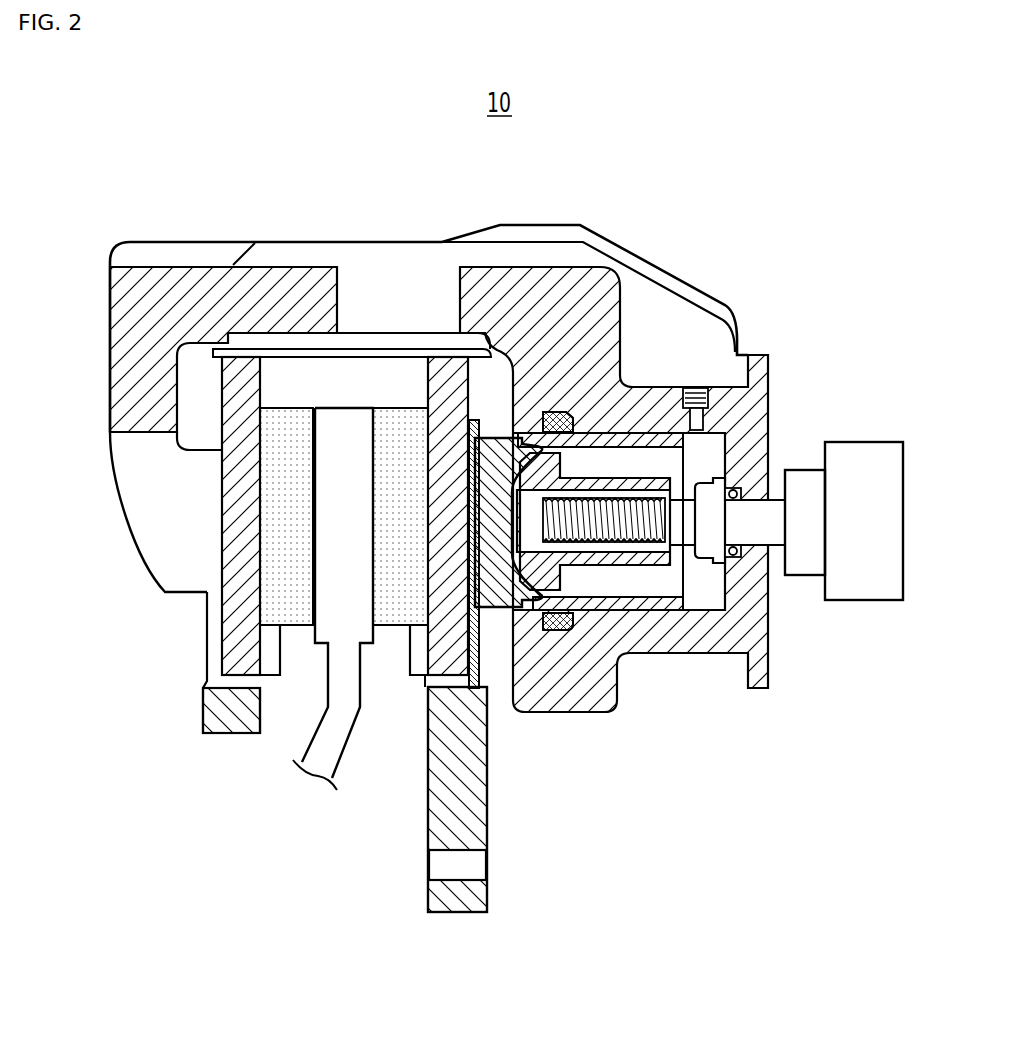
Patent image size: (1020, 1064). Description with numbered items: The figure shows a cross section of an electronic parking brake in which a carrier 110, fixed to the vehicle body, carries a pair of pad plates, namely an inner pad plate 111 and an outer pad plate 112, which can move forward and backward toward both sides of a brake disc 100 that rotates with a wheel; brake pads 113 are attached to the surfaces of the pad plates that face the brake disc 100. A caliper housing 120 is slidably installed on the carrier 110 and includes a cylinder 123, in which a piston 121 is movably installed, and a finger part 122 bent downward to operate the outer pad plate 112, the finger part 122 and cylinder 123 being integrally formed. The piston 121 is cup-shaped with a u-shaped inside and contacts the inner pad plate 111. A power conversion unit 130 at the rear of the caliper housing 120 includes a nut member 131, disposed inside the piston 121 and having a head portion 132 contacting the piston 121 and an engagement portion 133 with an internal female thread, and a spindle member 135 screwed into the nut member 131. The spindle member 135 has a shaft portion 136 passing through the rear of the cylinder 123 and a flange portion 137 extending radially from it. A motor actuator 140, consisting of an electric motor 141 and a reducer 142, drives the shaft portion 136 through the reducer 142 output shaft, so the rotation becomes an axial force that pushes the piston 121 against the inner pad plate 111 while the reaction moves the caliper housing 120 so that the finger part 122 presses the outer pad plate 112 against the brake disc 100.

The brake disc 100 is at (333, 770).
The carrier 110 is at (421, 780).
The inner pad plate 111 is at (432, 648).
The outer pad plate 112 is at (233, 618).
The brake pad 113 is at (296, 628).
The caliper housing 120 is at (411, 429).
The piston 121 is at (487, 585).
The finger part 122 is at (137, 488).
The cylinder 123 is at (758, 362).
The power conversion unit 130 is at (641, 530).
The nut member 131 is at (572, 654).
The head portion 132 is at (535, 612).
The engagement portion 133 is at (621, 560).
The spindle member 135 is at (675, 654).
The shaft portion 136 is at (735, 530).
The flange portion 137 is at (705, 540).
The motor actuator 140 is at (840, 468).
The electric motor 141 is at (864, 495).
The reducer 142 is at (798, 472).